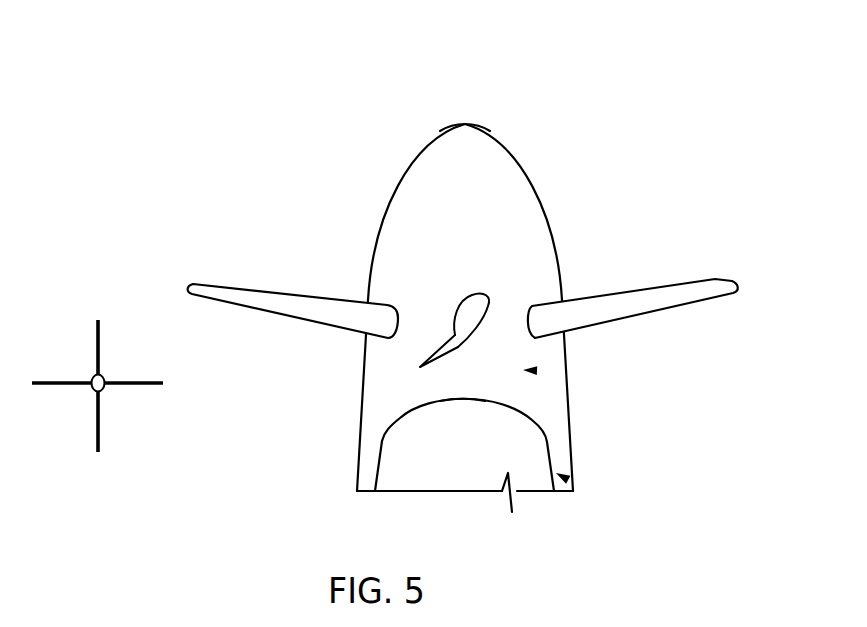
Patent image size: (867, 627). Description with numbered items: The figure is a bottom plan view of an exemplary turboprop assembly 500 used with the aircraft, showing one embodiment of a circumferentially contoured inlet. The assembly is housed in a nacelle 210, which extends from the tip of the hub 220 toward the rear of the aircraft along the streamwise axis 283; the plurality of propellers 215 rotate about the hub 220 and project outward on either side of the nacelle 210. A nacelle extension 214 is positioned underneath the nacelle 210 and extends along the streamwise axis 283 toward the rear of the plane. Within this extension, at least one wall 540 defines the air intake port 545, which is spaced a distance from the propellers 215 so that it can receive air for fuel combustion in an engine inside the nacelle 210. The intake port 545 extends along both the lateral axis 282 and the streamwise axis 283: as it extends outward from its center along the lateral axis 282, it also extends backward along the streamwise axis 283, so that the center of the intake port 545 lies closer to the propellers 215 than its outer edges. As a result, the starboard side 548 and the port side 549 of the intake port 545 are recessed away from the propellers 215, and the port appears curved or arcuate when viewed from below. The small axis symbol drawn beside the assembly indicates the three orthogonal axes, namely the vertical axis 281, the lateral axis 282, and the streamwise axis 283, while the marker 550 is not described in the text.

The turboprop assembly 500 is at (330, 40).
The nacelle 210 is at (356, 189).
The hub 220 is at (466, 123).
The propellers 215 is at (620, 279).
The air intake port 545 is at (537, 370).
The wall 540 is at (398, 430).
The starboard side 548 is at (381, 443).
The port side 549 is at (548, 442).
The door top edge 550 is at (462, 400).
The nacelle extension 214 is at (566, 478).
The vertical axis 281 is at (91, 389).
The lateral axis 282 is at (155, 381).
The streamwise axis 283 is at (100, 341).